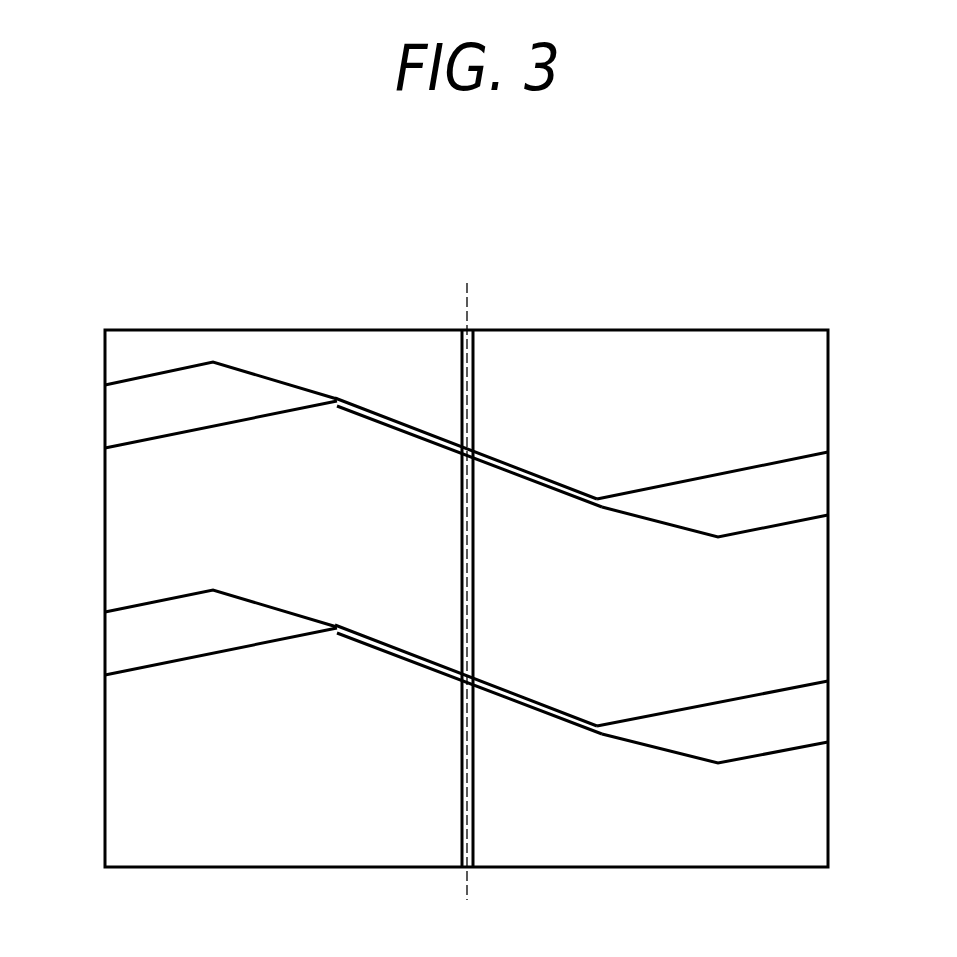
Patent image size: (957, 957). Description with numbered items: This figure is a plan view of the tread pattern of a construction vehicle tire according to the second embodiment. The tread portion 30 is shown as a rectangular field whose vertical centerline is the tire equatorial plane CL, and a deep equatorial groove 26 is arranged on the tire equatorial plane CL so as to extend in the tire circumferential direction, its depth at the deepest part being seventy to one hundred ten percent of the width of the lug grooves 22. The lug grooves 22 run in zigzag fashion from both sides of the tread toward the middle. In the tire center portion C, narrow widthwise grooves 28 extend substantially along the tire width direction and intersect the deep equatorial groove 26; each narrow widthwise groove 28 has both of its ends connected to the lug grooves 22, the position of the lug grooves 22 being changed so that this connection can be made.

The lug grooves 22 is at (112, 412).
The deep equatorial groove 26 is at (473, 330).
The narrow widthwise grooves 28 is at (560, 482).
The tread portion 30 is at (690, 264).
The tire center portion C is at (366, 232).
The tire equatorial plane CL is at (467, 303).